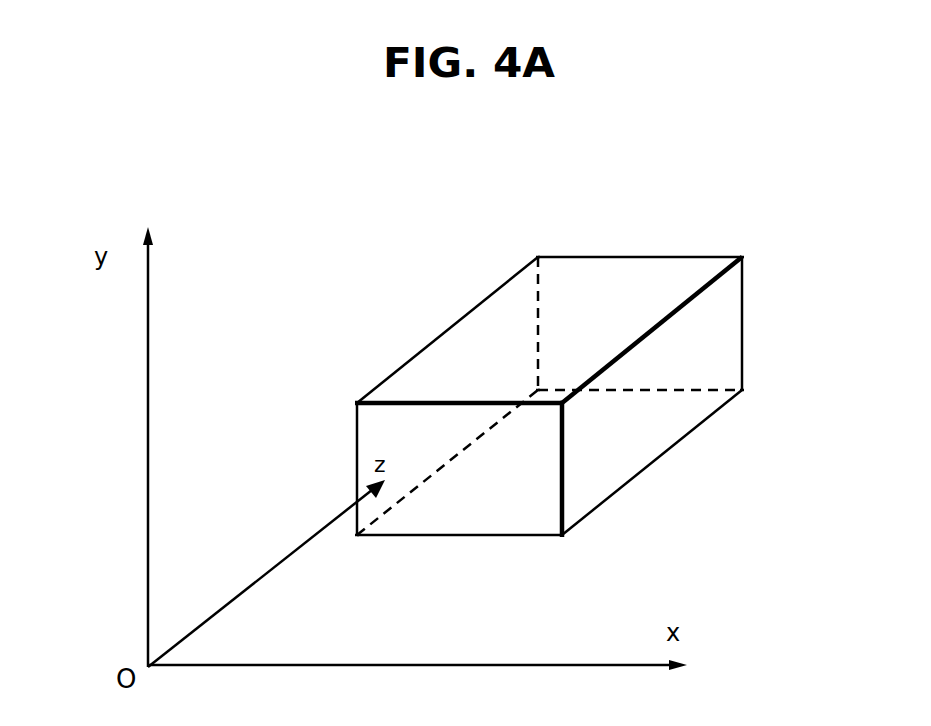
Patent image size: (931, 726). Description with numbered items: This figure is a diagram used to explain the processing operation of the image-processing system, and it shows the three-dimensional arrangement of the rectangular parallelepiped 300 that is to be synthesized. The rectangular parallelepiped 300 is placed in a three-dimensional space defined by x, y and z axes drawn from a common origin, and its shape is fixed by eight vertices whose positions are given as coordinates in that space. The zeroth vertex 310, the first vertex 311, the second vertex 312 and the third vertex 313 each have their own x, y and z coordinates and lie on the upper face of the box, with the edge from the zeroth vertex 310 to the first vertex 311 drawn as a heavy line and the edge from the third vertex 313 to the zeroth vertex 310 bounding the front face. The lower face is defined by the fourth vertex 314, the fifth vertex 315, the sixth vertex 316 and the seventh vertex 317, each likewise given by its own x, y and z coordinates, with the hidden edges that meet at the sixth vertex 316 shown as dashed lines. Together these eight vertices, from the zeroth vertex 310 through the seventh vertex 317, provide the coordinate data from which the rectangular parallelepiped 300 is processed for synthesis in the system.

The rectangular parallelepiped 300 is at (675, 446).
The vertex P0 310 is at (605, 418).
The vertex P1 311 is at (766, 236).
The vertex P2 312 is at (521, 219).
The vertex P3 313 is at (322, 387).
The vertex P4 314 is at (600, 559).
The vertex P5 315 is at (792, 393).
The vertex P6 316 is at (484, 362).
The vertex P7 317 is at (353, 563).